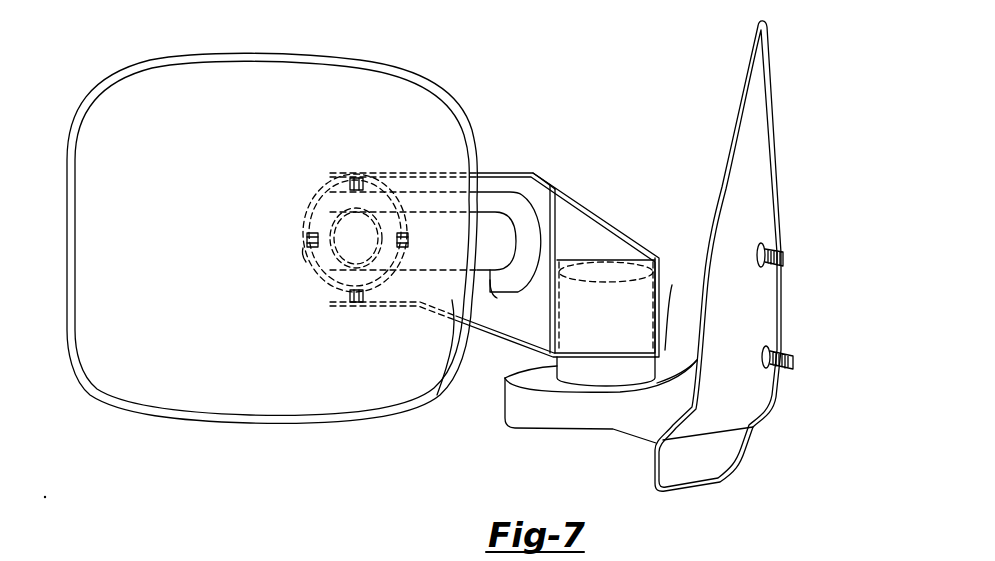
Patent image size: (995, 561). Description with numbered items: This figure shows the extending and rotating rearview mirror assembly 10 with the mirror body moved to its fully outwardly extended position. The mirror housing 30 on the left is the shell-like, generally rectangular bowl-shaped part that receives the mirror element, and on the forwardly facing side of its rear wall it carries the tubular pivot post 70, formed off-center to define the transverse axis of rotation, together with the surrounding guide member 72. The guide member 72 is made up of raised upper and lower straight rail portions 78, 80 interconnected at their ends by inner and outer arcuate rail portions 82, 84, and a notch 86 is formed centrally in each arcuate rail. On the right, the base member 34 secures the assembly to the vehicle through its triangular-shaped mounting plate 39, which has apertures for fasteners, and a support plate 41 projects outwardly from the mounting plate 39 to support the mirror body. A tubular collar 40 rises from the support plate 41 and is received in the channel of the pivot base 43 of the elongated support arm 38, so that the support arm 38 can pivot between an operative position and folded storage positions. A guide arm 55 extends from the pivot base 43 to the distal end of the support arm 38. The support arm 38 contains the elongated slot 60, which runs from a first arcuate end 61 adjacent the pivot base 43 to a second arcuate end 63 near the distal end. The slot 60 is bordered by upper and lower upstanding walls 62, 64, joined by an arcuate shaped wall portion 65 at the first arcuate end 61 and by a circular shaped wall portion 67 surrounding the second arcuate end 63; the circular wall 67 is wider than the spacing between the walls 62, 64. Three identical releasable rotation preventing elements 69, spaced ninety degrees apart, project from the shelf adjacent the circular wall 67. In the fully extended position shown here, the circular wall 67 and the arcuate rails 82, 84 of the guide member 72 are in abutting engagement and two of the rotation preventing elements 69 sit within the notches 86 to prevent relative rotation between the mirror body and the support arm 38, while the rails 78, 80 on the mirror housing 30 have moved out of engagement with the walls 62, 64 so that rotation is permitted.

The rearview mirror assembly 10 is at (635, 80).
The mirror housing 30 is at (82, 104).
The base member 34 is at (774, 100).
The support arm 38 is at (590, 196).
The mounting plate 39 is at (783, 238).
The collar 40 is at (646, 302).
The support plate 41 is at (612, 428).
The pivot base 43 is at (643, 247).
The guide arm 55 is at (455, 377).
The elongated slot 60 is at (506, 250).
The first arcuate end 61 is at (512, 226).
The upper upstanding wall 62 is at (520, 180).
The second arcuate end 63 is at (332, 233).
The lower upstanding wall 64 is at (497, 298).
The arcuate shaped wall portion 65 is at (538, 238).
The circular shaped wall portion 67 is at (318, 200).
The releasable rotation preventing element 69 is at (267, 275).
The pivot post 70 is at (380, 237).
The guide member 72 is at (405, 200).
The upper straight rail portion 78 is at (345, 188).
The lower straight rail portion 80 is at (350, 300).
The inner arcuate rail portion 82 is at (403, 267).
The outer arcuate rail portion 84 is at (340, 286).
The notch 86 is at (310, 256).